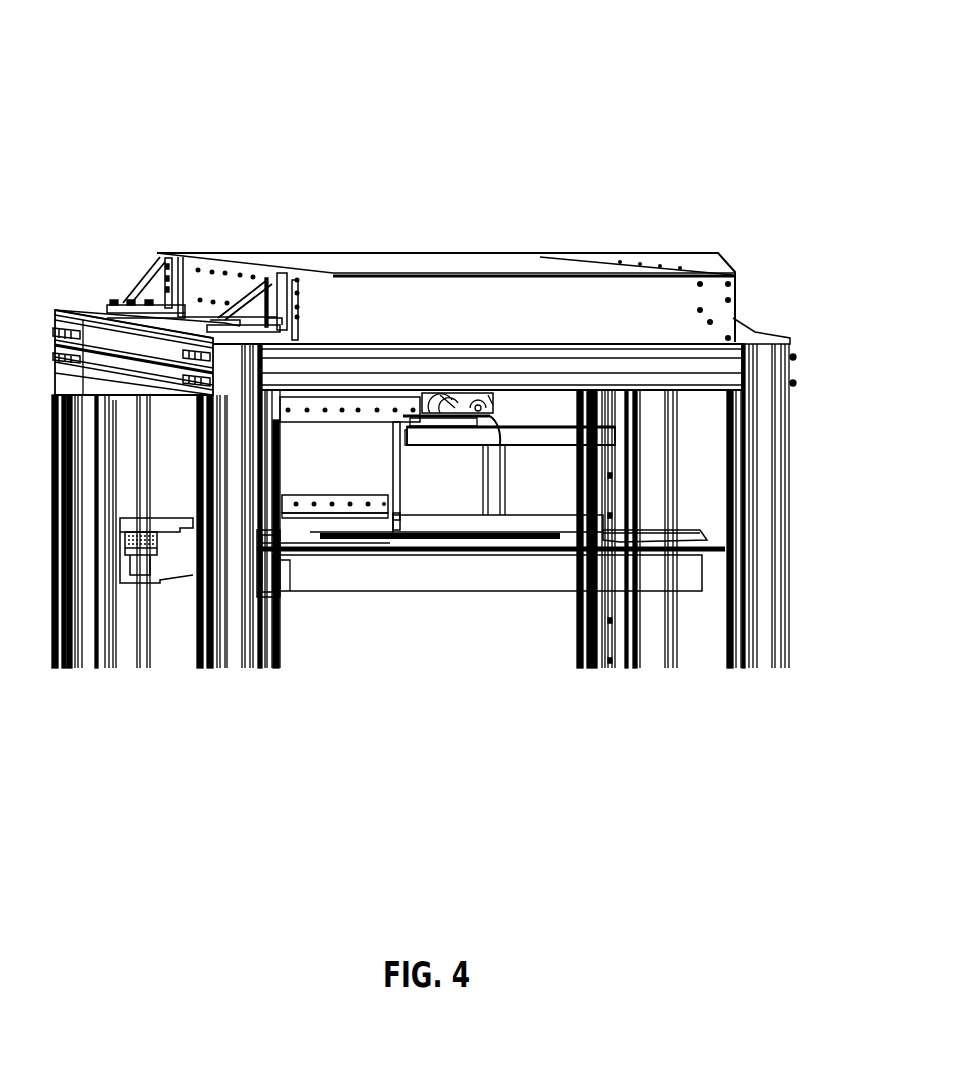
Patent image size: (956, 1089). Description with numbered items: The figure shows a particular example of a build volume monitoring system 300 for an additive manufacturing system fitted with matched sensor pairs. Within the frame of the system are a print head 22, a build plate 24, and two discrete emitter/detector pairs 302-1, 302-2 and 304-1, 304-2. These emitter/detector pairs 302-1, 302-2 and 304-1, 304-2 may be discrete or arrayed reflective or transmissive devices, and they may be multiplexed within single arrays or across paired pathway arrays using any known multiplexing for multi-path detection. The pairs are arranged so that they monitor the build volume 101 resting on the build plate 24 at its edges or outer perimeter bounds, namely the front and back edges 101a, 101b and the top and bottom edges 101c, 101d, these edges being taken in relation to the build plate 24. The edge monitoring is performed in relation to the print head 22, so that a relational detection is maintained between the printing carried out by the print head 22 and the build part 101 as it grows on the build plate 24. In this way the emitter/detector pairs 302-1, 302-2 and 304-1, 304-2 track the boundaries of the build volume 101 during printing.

The build volume monitoring system 300 is at (622, 42).
The print head 22 is at (462, 398).
The build plate 24 is at (343, 527).
The build volume 101 is at (423, 508).
The front edge 101a is at (387, 530).
The back edge 101b is at (487, 438).
The top edge 101c is at (393, 507).
The bottom edge 101d is at (477, 543).
The emitter 302-1 is at (320, 412).
The detector 302-2 is at (352, 412).
The emitter 304-1 is at (485, 445).
The detector 304-2 is at (527, 523).